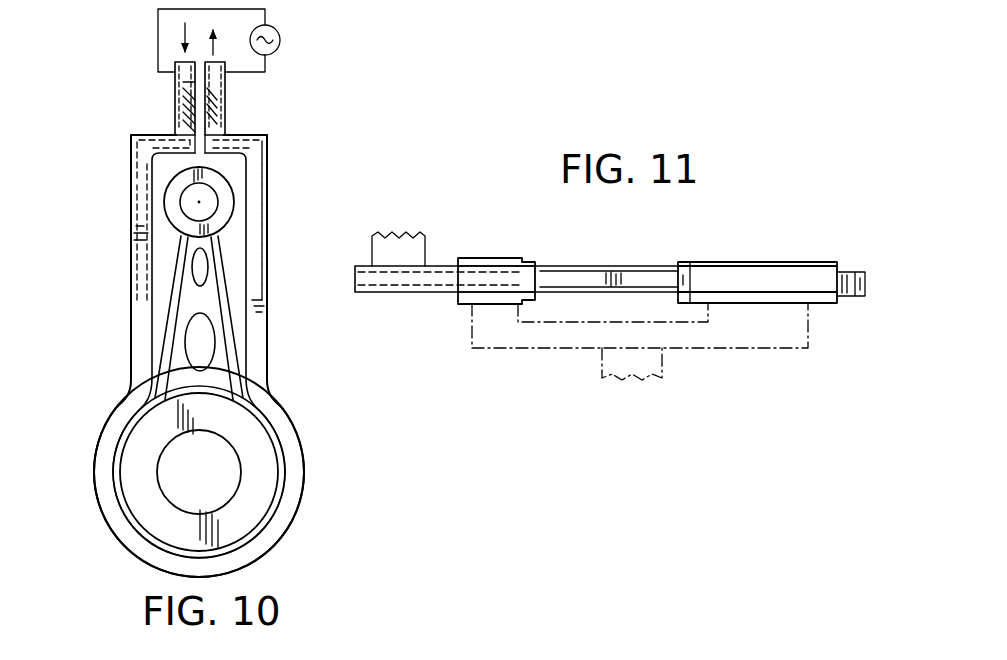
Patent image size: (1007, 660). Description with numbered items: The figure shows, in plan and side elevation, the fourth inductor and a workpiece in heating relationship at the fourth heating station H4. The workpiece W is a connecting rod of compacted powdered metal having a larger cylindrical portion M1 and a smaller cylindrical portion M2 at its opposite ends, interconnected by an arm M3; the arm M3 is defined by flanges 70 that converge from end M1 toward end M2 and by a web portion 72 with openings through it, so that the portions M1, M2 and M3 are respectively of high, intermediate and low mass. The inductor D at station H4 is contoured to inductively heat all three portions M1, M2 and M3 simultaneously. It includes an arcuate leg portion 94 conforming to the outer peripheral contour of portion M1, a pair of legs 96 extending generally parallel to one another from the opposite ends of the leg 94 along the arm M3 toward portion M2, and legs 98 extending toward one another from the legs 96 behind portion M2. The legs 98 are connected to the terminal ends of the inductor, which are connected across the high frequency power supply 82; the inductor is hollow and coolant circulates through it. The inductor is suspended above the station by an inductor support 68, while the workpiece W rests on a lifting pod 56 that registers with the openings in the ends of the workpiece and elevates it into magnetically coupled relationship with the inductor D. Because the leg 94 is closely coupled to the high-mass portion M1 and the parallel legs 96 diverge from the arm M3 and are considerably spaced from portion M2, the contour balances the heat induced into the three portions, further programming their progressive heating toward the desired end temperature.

In FIG. 11, the lifting pod 56 is at (734, 352).
In FIG. 10, the inductor support 68 is at (178, 98).
In FIG. 11, the inductor support 68 is at (400, 236).
In FIG. 10, the flange 70 is at (181, 263).
In FIG. 10, the web portion 72 is at (216, 318).
In FIG. 10, the high frequency power supply 82 is at (281, 37).
In FIG. 10, the arcuate leg portion 94 is at (284, 512).
In FIG. 11, the arcuate leg portion 94 is at (818, 303).
In FIG. 10, the legs 96 is at (131, 200).
In FIG. 11, the legs 96 is at (510, 290).
In FIG. 10, the legs 98 is at (153, 136).
In FIG. 11, the legs 98 is at (437, 289).
In FIG. 10, the cylindrical portion M1 is at (272, 468).
In FIG. 11, the cylindrical portion M1 is at (790, 263).
In FIG. 10, the cylindrical portion M2 is at (226, 188).
In FIG. 11, the cylindrical portion M2 is at (505, 258).
In FIG. 10, the arm M3 is at (160, 324).
In FIG. 11, the arm M3 is at (612, 266).
In FIG. 10, the workpiece W is at (232, 243).
In FIG. 11, the workpiece W is at (709, 262).
In FIG. 10, the inductor D is at (130, 305).
In FIG. 11, the inductor D is at (590, 297).
In FIG. 10, the heating station H4 is at (118, 392).